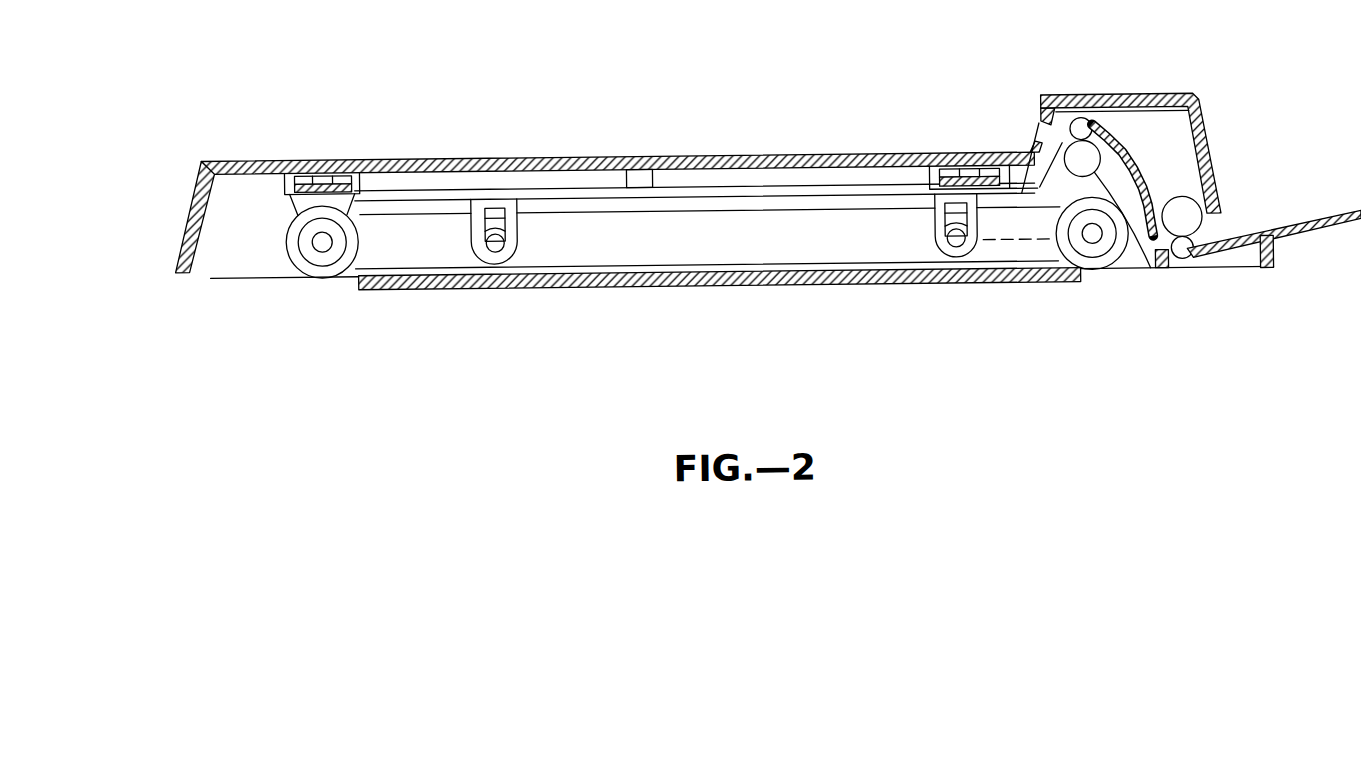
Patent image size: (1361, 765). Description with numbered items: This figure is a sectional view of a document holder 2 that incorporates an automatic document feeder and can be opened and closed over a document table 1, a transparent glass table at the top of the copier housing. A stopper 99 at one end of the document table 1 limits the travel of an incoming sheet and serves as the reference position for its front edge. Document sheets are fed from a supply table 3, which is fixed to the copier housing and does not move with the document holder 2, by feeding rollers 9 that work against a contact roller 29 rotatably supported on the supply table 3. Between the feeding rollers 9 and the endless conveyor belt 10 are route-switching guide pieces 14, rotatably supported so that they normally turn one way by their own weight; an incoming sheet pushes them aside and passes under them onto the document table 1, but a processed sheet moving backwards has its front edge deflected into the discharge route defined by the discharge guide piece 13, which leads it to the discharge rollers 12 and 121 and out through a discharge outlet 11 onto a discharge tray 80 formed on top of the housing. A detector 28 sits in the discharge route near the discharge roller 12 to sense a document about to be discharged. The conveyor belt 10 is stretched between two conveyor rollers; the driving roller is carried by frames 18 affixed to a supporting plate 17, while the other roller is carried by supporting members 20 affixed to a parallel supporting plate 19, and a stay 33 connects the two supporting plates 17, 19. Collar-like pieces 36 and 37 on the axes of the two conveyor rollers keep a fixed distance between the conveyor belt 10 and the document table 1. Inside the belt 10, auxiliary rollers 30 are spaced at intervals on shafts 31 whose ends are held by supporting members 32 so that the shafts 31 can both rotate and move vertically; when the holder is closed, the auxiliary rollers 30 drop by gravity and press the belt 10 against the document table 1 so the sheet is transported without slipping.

The document table 1 is at (612, 278).
The document holder 2 is at (608, 168).
The supply table 3 is at (1313, 223).
The feeding rollers 9 is at (1183, 224).
The endless conveyor belt 10 is at (922, 272).
The discharge outlet 11 is at (1040, 133).
The discharge roller 12 is at (1083, 133).
The discharge guide piece 13 is at (1117, 186).
The route-switching guide pieces 14 is at (1160, 258).
The supporting plate 17 is at (968, 187).
The frames 18 is at (954, 135).
The supporting plate 19 is at (310, 182).
The supporting members 20 is at (285, 194).
The detector 28 is at (1118, 143).
The contact roller 29 is at (1183, 258).
The auxiliary rollers 30 is at (483, 262).
The shafts 31 is at (494, 248).
The supporting members 32 is at (518, 237).
The stay 33 is at (454, 188).
The collar-like piece 36 is at (1100, 269).
The collar-like piece 37 is at (300, 277).
The discharge tray 80 is at (810, 160).
The stopper 99 is at (354, 277).
The discharge roller 121 is at (1050, 105).